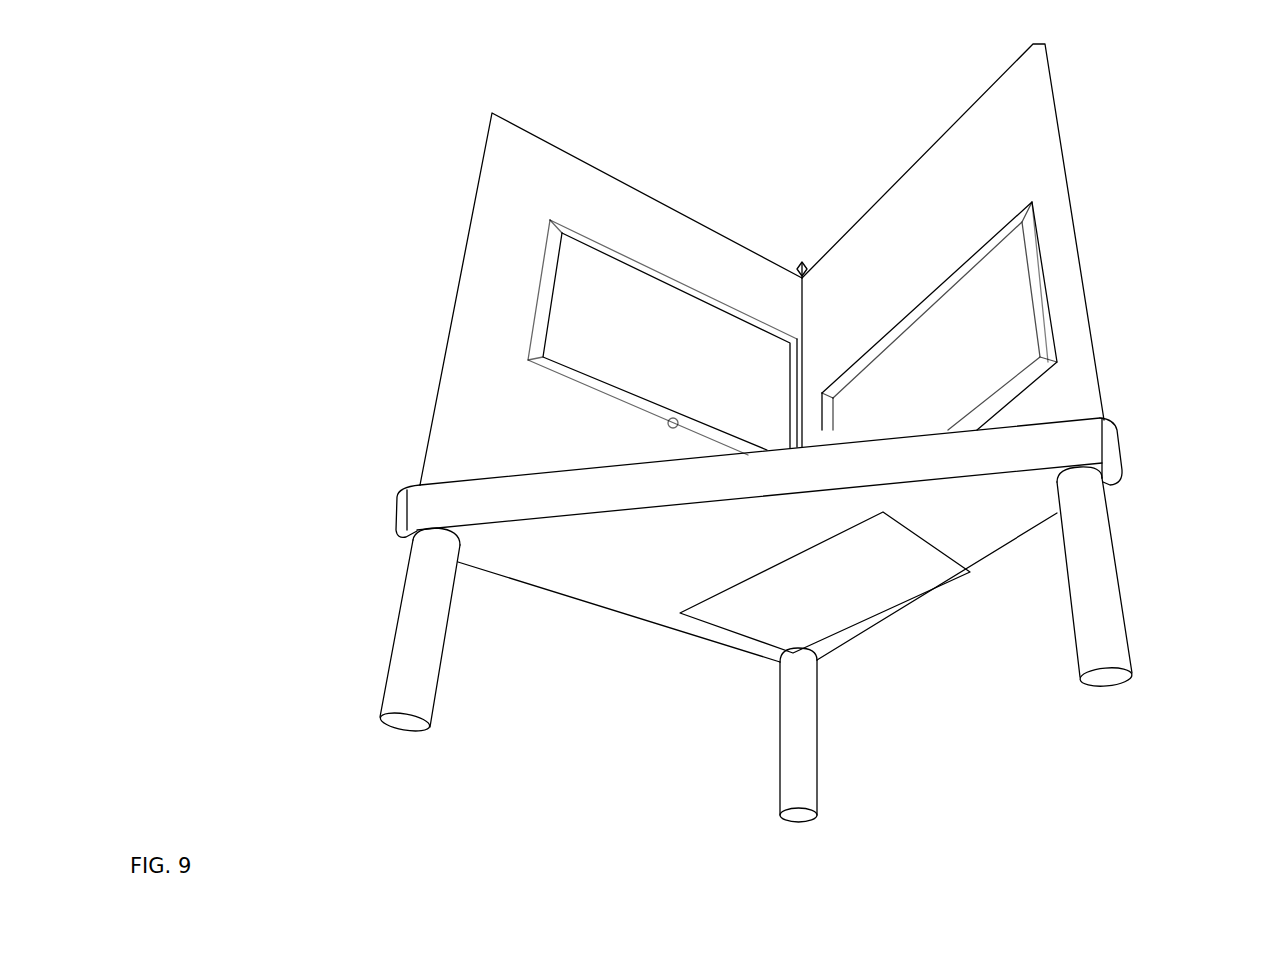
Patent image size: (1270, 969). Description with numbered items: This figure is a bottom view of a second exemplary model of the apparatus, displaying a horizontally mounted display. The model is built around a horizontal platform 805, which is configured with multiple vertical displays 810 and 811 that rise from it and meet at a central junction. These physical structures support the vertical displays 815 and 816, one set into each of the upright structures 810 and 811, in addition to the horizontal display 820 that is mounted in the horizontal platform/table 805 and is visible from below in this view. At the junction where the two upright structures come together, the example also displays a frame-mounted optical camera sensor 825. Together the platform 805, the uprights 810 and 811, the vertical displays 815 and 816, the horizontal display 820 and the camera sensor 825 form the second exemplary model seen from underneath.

The horizontal platform 805 is at (427, 513).
The vertical display structure 810 is at (470, 382).
The vertical display structure 811 is at (1080, 383).
The vertical display 815 is at (608, 280).
The vertical display 816 is at (1018, 278).
The horizontal display 820 is at (805, 593).
The frame-mounted optical camera sensor 825 is at (797, 278).